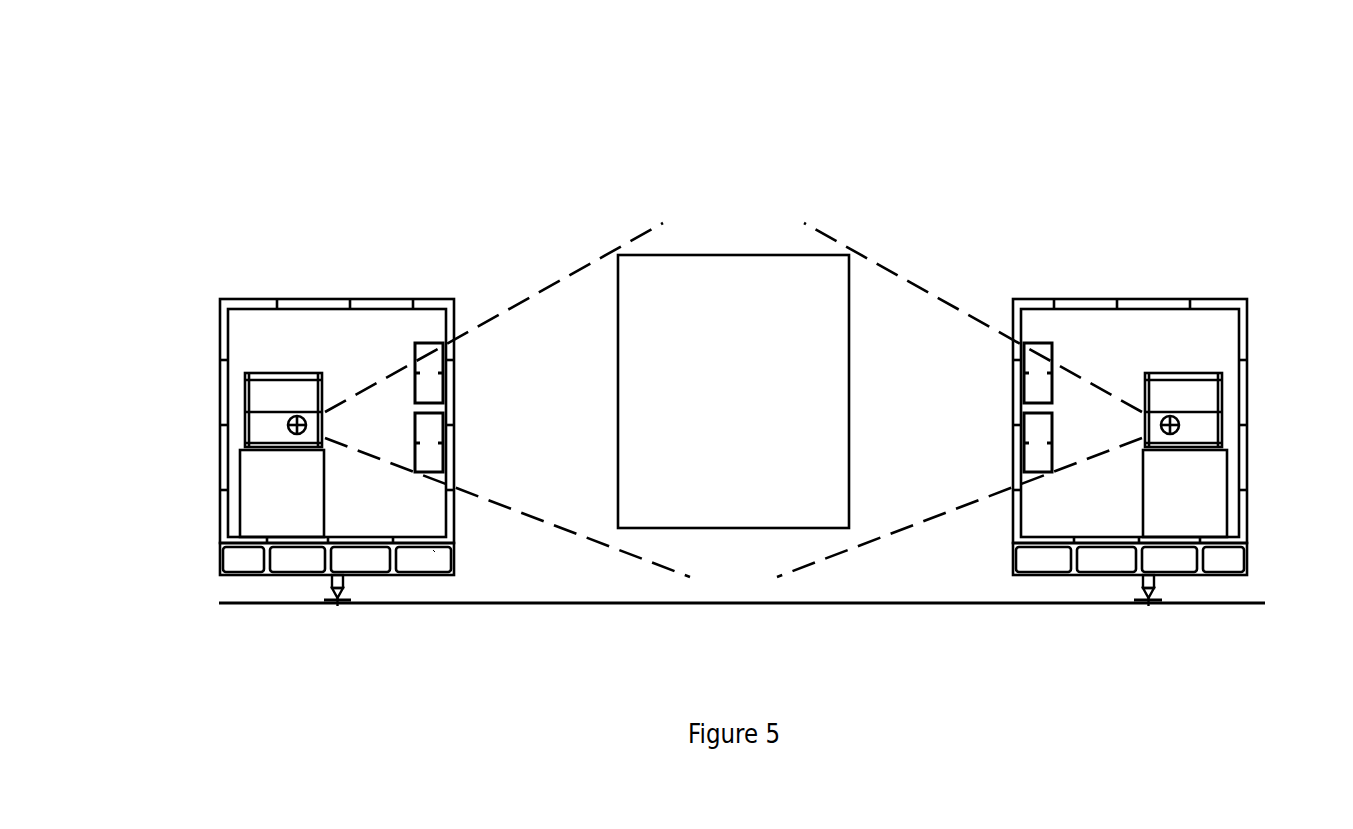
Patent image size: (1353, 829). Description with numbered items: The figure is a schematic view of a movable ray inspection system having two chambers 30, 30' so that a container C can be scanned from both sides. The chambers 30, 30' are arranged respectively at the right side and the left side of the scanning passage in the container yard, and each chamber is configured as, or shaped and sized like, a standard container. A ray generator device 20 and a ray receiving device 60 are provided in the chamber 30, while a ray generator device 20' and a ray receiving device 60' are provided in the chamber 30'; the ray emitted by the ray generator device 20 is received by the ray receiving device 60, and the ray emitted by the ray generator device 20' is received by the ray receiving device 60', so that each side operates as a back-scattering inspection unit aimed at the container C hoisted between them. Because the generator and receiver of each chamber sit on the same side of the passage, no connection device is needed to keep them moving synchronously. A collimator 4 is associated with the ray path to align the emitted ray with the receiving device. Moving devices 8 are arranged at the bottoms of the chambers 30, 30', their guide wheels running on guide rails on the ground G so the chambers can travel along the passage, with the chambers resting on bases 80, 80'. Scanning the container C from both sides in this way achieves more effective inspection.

The collimator 4 is at (433, 550).
The moving device 8 is at (1187, 617).
The ray generator device 20 is at (216, 455).
The ray generator device 20' is at (1224, 439).
The chamber 30 is at (330, 351).
The chamber 30' is at (1131, 345).
The ray receiving device 60 is at (395, 316).
The ray receiving device 60' is at (1015, 323).
The base 80 is at (300, 570).
The base (second) 80' is at (1171, 576).
The container C is at (713, 275).
The ground G is at (422, 605).